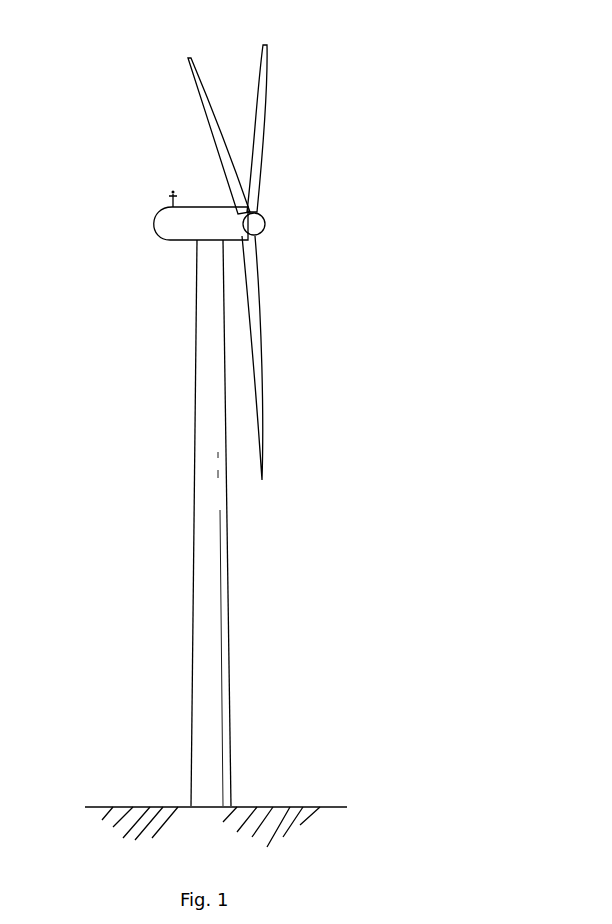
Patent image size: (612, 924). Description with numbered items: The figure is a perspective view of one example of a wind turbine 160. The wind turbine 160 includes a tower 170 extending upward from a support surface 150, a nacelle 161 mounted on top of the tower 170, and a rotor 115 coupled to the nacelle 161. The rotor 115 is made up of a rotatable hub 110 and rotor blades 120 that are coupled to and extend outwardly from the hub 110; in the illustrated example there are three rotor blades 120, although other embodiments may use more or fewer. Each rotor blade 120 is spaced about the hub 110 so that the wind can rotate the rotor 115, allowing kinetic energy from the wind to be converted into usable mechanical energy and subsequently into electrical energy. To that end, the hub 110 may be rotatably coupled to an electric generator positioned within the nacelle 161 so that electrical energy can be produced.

The hub 110 is at (263, 226).
The rotor 115 is at (270, 254).
The rotor blade 120 is at (259, 72).
The support surface 150 is at (141, 806).
The wind turbine 160 is at (345, 97).
The nacelle 161 is at (182, 241).
The tower 170 is at (203, 602).